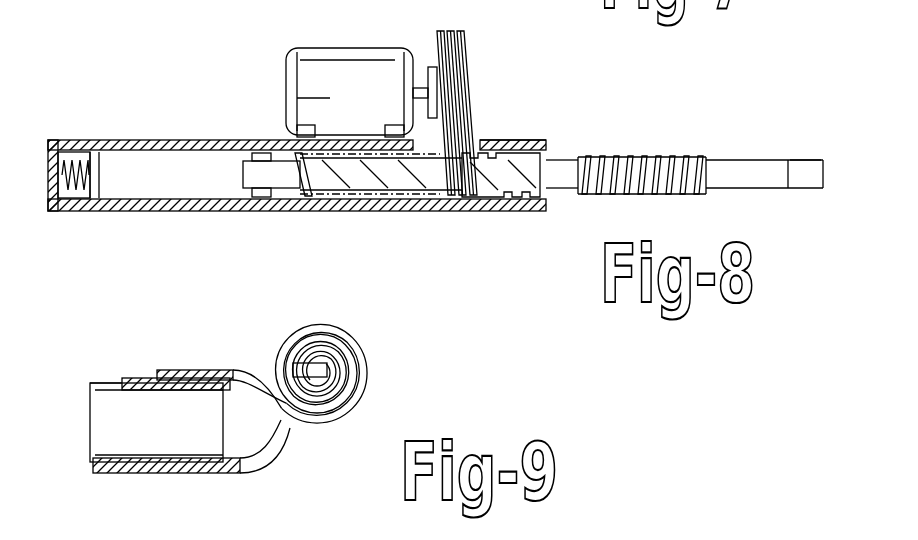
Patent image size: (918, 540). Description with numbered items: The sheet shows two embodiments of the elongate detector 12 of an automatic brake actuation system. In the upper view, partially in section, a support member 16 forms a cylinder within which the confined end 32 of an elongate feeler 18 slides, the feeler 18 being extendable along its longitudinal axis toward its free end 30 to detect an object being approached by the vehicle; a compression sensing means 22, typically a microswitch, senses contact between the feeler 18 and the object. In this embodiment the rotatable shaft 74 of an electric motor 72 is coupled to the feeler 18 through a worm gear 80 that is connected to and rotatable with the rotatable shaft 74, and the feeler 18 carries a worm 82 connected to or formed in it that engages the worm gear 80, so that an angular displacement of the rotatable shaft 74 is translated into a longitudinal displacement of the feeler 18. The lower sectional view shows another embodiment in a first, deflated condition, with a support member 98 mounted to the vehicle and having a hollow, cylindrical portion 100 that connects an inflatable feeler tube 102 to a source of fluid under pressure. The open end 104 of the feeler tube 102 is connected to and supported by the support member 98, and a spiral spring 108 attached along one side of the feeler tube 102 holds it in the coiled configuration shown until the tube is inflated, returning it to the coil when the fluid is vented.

In FIG. 8, the elongate detector 12 is at (552, 113).
In FIG. 8, the support member 16 is at (173, 140).
In FIG. 8, the elongate feeler 18 is at (722, 190).
In FIG. 8, the compression sensing means 22 is at (814, 200).
In FIG. 8, the free end 30 is at (866, 128).
In FIG. 8, the confined end 32 is at (222, 180).
In FIG. 8, the electric motor 72 is at (306, 48).
In FIG. 8, the rotatable shaft 74 is at (427, 68).
In FIG. 8, the worm gear 80 is at (467, 72).
In FIG. 8, the worm 82 is at (648, 158).
In FIG. 9, the support member 98 is at (100, 378).
In FIG. 9, the hollow, cylindrical portion 100 is at (112, 463).
In FIG. 9, the inflatable feeler tube 102 is at (286, 430).
In FIG. 9, the open end 104 is at (264, 336).
In FIG. 9, the spiral spring 108 is at (181, 378).